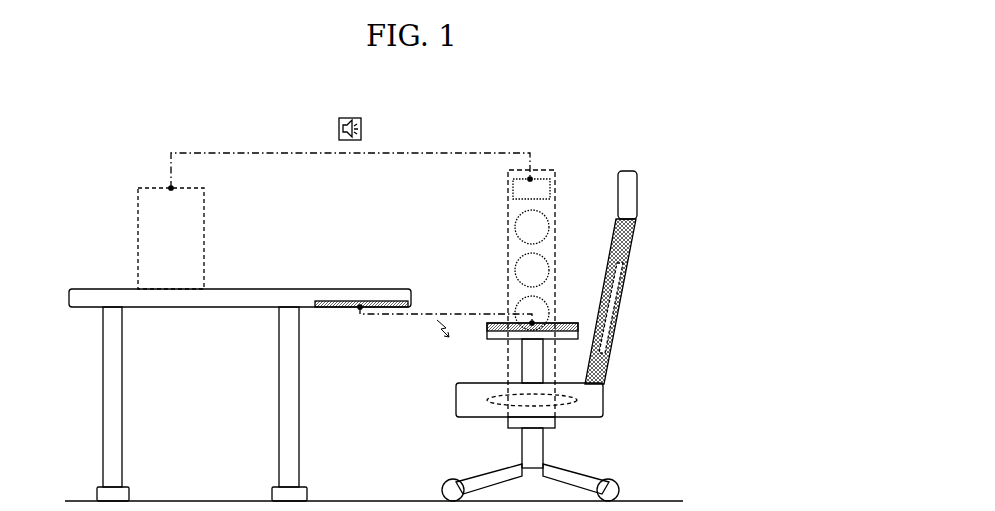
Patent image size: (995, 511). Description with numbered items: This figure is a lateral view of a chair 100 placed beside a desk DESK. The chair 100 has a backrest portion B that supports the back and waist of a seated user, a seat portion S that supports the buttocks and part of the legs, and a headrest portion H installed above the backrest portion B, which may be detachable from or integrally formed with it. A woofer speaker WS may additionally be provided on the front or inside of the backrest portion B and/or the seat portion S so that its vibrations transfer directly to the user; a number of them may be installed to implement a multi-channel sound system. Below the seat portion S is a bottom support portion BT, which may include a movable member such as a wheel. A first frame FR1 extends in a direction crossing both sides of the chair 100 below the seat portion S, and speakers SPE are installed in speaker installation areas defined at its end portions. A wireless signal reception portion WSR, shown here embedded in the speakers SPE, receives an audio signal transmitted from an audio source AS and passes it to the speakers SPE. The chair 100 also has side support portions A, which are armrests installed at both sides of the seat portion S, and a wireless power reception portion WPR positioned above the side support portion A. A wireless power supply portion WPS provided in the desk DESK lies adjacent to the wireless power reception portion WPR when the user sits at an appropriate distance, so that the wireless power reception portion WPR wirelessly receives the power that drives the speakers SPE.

The chair 100 is at (572, 317).
The desk DESK is at (90, 293).
The audio source AS is at (157, 200).
The wireless power supply portion WPS is at (340, 303).
The wireless signal reception portion WSR is at (520, 192).
The speakers SPE is at (515, 243).
The headrest portion H is at (630, 190).
The backrest portion B is at (633, 243).
The woofer speaker WS is at (625, 282).
The wireless power reception portion WPR is at (592, 333).
The side support portions A is at (525, 367).
The seat portion S is at (598, 397).
The first frame FR1 is at (570, 426).
The bottom support portion BT is at (528, 437).